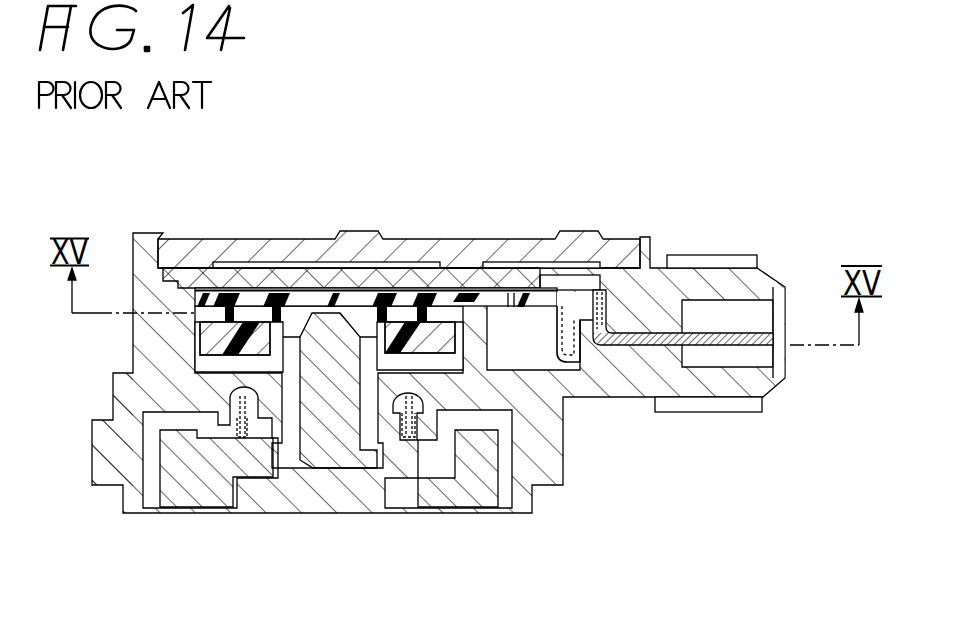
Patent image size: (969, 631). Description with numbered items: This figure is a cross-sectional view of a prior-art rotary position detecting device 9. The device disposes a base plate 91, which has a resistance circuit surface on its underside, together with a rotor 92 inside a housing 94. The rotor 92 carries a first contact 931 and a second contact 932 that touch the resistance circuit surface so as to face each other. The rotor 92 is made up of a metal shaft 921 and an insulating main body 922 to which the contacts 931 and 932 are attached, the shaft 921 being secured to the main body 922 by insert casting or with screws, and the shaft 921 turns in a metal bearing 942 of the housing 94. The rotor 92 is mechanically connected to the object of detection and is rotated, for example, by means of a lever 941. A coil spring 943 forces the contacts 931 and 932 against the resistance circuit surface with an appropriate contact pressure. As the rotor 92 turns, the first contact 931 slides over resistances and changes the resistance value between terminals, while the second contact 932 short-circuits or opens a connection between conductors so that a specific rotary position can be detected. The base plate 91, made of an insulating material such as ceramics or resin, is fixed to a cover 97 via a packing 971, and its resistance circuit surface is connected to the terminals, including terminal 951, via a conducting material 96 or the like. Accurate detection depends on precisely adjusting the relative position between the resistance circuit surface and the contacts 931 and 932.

The rotary position detecting device 9 is at (364, 138).
The base plate 91 is at (456, 288).
The rotor 92 is at (196, 331).
The shaft 921 is at (335, 466).
The main body 922 is at (217, 343).
The first contact 931 is at (288, 292).
The second contact 932 is at (408, 290).
The housing 94 is at (113, 455).
The lever 941 is at (185, 497).
The bearing 942 is at (288, 440).
The coil spring 943 is at (462, 507).
The terminal 951 is at (768, 365).
The conducting material 96 is at (560, 303).
The cover 97 is at (520, 253).
The packing 971 is at (203, 277).